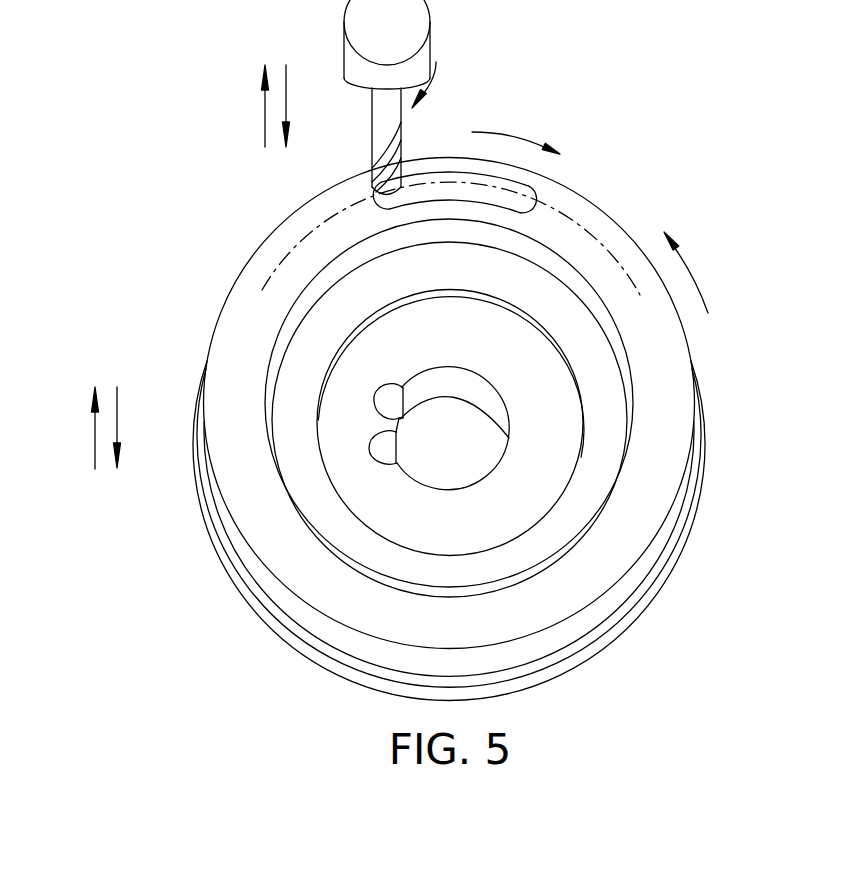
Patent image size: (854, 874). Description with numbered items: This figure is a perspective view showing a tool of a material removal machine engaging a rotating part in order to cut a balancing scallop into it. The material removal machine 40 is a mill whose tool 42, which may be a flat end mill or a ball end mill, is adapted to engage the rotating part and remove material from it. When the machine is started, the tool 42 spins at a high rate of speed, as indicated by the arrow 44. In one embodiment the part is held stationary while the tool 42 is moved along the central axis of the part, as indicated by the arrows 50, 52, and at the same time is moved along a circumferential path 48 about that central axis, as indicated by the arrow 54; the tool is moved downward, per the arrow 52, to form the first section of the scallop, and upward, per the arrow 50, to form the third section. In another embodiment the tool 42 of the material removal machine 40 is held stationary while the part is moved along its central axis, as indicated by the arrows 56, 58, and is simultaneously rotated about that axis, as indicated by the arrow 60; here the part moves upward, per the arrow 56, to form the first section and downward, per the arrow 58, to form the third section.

The material removal machine 40 is at (344, 52).
The tool 42 is at (372, 151).
The arrow 44 is at (434, 74).
The circumferential path 48 is at (277, 269).
The arrow 50 is at (264, 114).
The arrow 52 is at (288, 95).
The arrow 54 is at (508, 137).
The arrow 56 is at (92, 438).
The arrow 58 is at (119, 415).
The arrow 60 is at (697, 283).